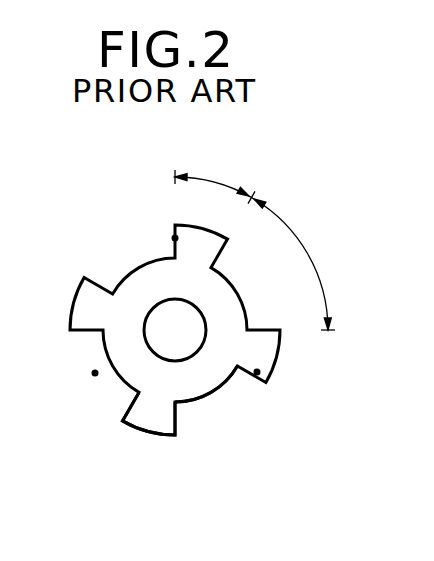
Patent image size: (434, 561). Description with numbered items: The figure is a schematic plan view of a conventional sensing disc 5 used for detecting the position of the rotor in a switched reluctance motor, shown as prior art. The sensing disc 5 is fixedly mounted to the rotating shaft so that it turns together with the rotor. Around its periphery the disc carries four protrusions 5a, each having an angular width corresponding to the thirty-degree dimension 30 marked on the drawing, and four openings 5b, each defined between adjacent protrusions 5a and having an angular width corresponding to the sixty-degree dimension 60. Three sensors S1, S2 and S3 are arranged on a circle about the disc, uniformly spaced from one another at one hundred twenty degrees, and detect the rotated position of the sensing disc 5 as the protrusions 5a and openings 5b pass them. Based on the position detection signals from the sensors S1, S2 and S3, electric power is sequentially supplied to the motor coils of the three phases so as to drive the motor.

The sensing disc 5 is at (203, 403).
The protrusion 5a is at (150, 430).
The opening 5b is at (195, 422).
The sensor S1 is at (175, 238).
The sensor S2 is at (95, 373).
The sensor S3 is at (257, 372).
The 30 degree angle 30 is at (215, 177).
The 60 degree angle 60 is at (299, 264).